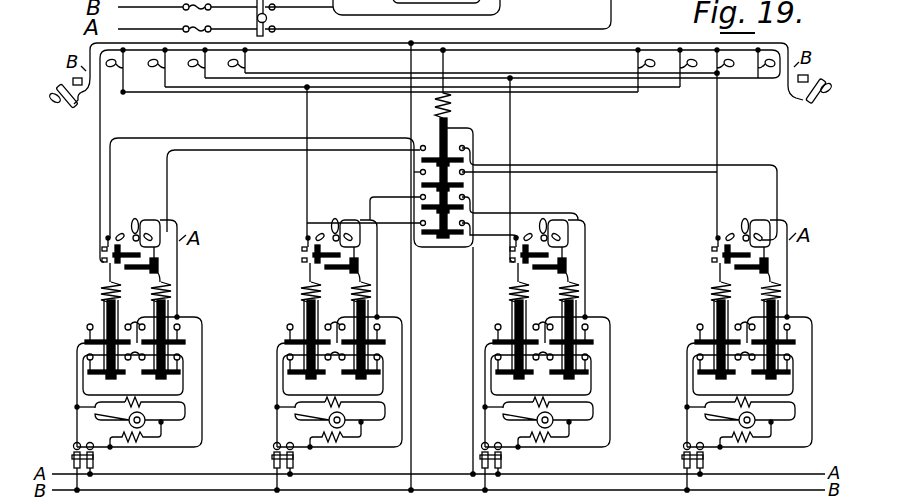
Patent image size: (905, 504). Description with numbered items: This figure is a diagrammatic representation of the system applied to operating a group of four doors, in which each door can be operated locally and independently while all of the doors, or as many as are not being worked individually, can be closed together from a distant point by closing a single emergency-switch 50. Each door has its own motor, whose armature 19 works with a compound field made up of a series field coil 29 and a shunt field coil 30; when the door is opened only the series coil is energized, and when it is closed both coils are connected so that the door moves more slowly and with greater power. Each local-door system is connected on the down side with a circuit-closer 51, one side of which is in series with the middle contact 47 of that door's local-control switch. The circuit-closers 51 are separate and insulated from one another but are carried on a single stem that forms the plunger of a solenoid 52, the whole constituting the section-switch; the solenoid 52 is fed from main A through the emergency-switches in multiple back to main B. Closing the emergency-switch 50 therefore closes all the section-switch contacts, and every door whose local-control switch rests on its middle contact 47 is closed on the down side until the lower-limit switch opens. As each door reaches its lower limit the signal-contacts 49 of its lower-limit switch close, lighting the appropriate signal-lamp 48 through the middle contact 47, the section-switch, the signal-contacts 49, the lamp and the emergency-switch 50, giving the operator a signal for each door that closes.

The armature 19 is at (129, 425).
The series field coil 29 is at (150, 404).
The shunt field coil 30 is at (163, 437).
The middle contact of the local-control switch 47 is at (127, 236).
The signal-lamp 48 is at (439, 70).
The signal-contacts 49 is at (121, 287).
The emergency-switch 50 is at (64, 103).
The circuit-closer 51 is at (441, 124).
The solenoid 52 is at (449, 112).